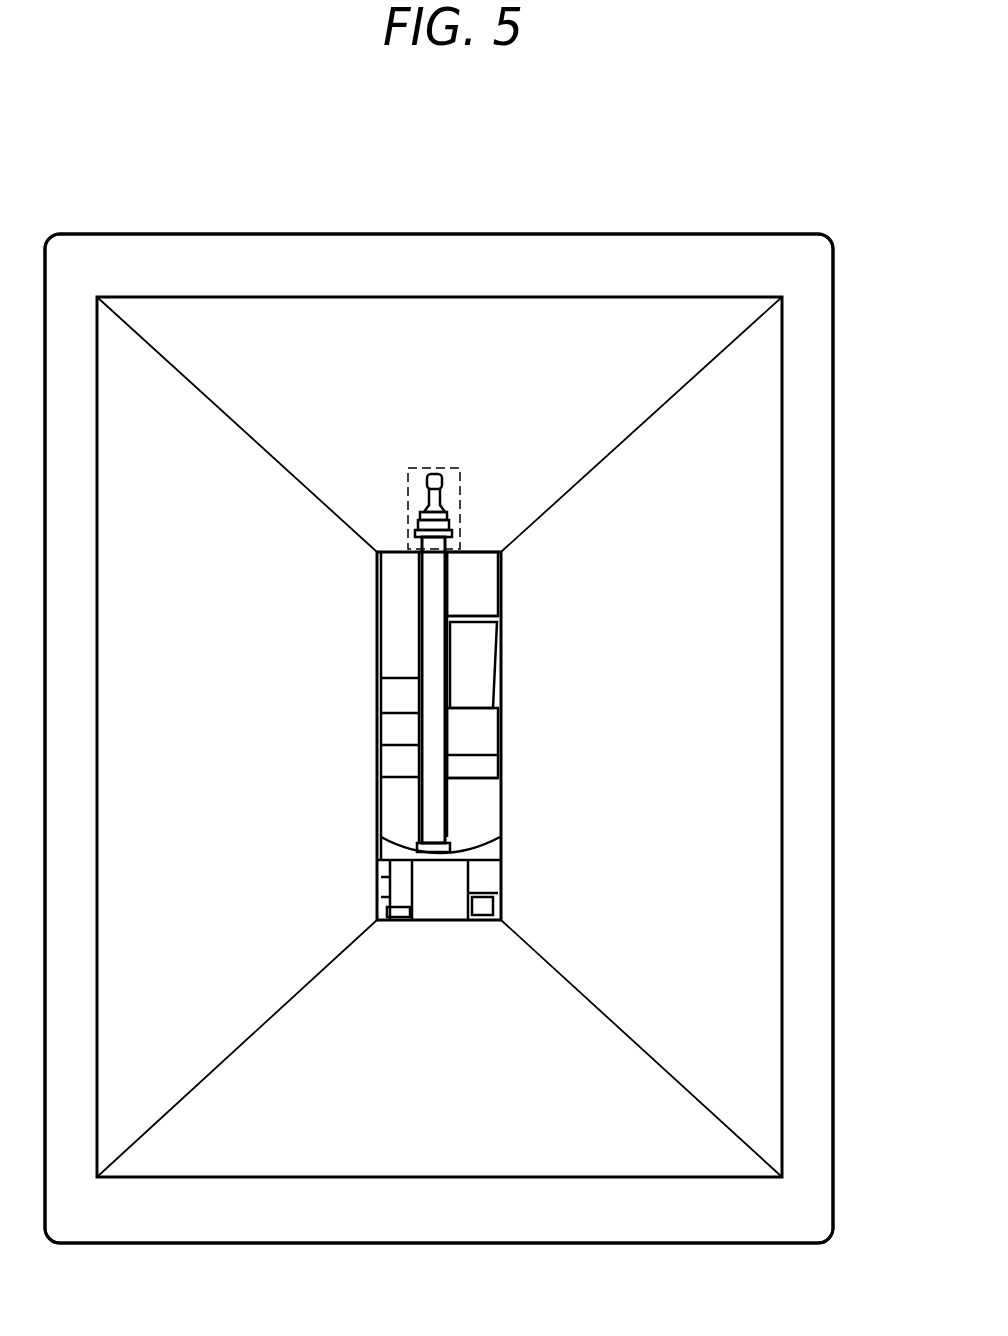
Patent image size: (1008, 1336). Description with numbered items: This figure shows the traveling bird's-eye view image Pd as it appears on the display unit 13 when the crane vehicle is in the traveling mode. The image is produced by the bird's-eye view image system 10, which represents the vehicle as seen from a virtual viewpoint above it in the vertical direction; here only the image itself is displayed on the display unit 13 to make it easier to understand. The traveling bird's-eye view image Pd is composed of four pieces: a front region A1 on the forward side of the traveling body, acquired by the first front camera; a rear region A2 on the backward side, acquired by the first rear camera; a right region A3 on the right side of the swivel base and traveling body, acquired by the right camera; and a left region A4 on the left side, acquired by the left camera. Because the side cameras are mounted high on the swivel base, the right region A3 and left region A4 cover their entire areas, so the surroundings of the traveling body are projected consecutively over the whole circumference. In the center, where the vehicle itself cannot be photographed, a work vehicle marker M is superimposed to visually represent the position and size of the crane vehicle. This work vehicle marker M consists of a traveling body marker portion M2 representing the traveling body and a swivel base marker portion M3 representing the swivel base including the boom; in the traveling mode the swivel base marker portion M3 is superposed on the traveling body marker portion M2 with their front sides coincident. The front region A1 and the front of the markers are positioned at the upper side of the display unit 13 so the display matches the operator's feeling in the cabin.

The bird's-eye view image system 10 is at (590, 190).
The display unit 13 is at (664, 206).
The traveling bird's-eye view image Pd is at (395, 290).
The front region A1 is at (456, 378).
The rear region A2 is at (456, 1092).
The right region A3 is at (695, 732).
The left region A4 is at (206, 732).
The work vehicle marker M is at (523, 652).
The traveling body marker portion M2 is at (475, 600).
The swivel base marker portion M3 is at (482, 738).